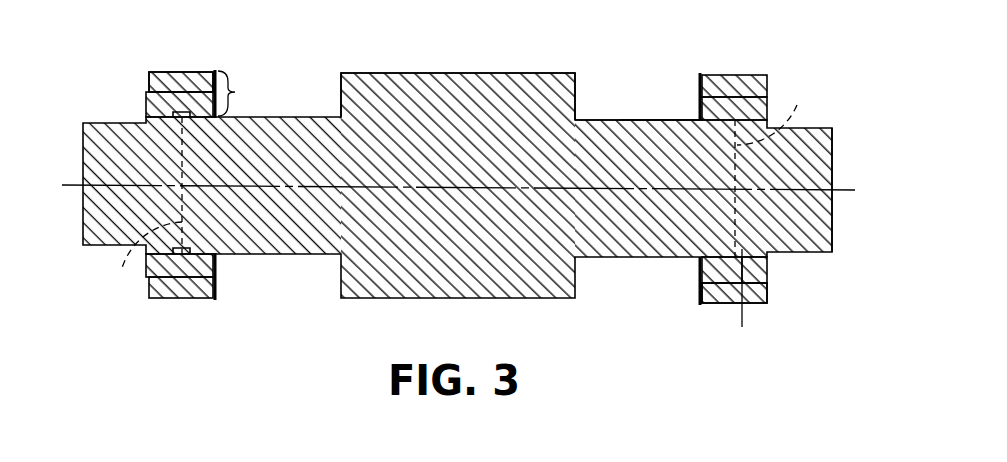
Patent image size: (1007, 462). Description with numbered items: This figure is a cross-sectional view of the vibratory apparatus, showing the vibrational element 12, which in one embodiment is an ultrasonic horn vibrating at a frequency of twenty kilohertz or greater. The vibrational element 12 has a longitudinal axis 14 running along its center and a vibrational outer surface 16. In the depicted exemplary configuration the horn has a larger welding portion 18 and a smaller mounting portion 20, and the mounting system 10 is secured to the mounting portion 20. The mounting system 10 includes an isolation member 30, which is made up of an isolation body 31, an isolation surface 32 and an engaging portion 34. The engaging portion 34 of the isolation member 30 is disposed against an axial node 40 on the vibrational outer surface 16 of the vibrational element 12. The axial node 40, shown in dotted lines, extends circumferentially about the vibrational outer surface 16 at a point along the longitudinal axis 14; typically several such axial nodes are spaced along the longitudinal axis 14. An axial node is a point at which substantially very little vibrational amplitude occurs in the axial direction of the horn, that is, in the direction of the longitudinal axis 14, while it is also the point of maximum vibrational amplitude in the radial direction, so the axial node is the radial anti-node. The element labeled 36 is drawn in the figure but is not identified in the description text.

The mounting system 10 is at (167, 60).
The vibrational element 12 is at (842, 227).
The longitudinal axis 14 is at (68, 184).
The vibrational outer surface 16 is at (610, 112).
The welding portion 18 is at (500, 73).
The mounting portion 20 is at (652, 118).
The isolation member 30 is at (790, 282).
The isolation body 31 is at (248, 93).
The isolation surface 32 is at (192, 72).
The engaging portion 34 is at (726, 266).
The seal groove 36 is at (176, 117).
The axial node 40 is at (459, 190).